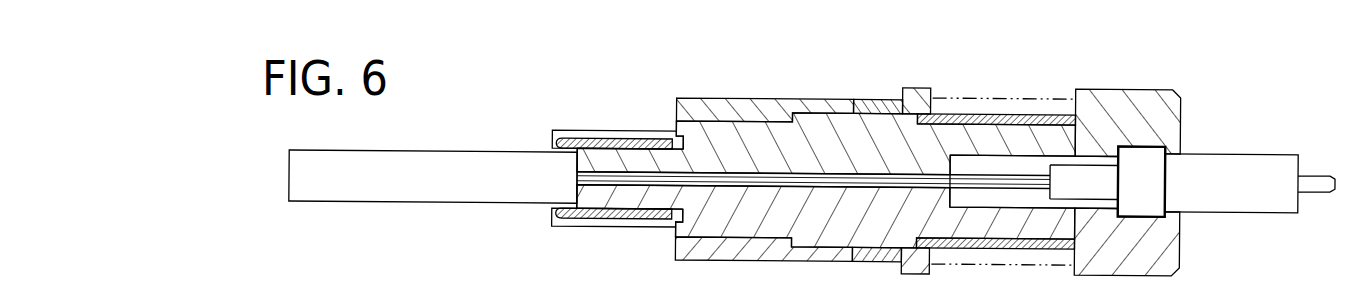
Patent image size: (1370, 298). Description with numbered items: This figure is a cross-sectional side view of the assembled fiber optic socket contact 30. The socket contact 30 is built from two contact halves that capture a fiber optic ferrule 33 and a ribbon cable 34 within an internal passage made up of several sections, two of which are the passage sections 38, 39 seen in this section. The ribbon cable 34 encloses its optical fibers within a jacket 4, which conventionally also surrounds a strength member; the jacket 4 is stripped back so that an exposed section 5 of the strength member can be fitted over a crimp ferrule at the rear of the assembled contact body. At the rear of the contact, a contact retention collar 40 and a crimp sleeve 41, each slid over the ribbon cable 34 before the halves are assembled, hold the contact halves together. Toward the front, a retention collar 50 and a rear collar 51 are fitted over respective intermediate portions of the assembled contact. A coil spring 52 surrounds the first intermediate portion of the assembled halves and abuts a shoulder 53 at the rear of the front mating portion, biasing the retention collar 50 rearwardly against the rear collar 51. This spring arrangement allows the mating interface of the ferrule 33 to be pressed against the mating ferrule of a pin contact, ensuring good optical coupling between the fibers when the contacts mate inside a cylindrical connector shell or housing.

The jacket 4 is at (443, 168).
The socket contact 30 is at (508, 118).
The ribbon cable 34 is at (405, 199).
The section of strength member 5 is at (598, 142).
The crimp sleeve 41 is at (586, 210).
The rear collar 51 is at (692, 99).
The passage section 39 is at (826, 187).
The retention collar 50 is at (858, 98).
The coil spring 52 is at (963, 98).
The contact retention collar 40 is at (1030, 113).
The passage section 38 is at (1005, 192).
The shoulder 53 is at (1075, 92).
The fiber optic ferrule 33 is at (1210, 152).